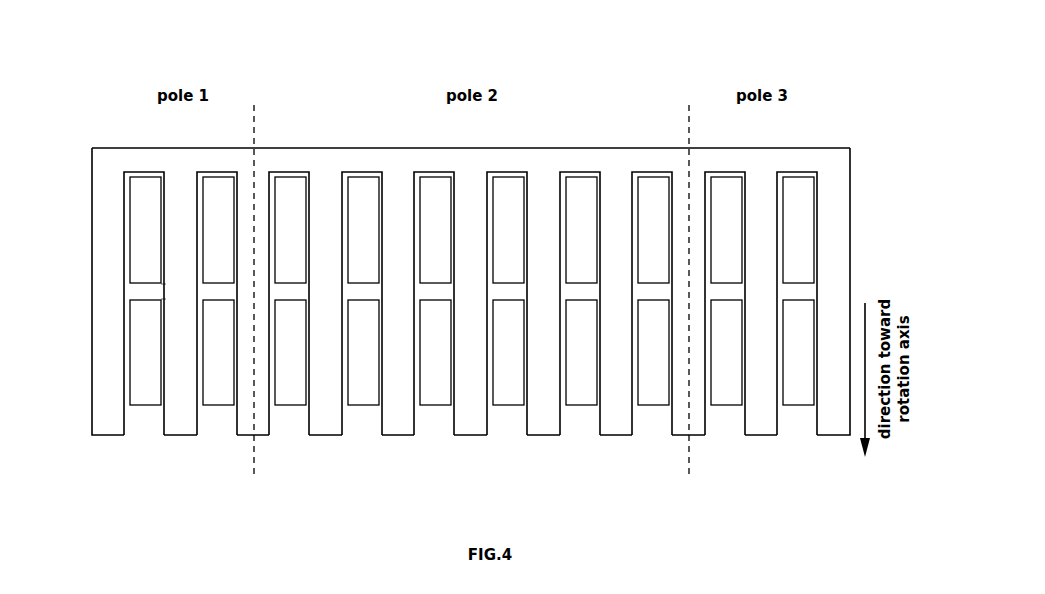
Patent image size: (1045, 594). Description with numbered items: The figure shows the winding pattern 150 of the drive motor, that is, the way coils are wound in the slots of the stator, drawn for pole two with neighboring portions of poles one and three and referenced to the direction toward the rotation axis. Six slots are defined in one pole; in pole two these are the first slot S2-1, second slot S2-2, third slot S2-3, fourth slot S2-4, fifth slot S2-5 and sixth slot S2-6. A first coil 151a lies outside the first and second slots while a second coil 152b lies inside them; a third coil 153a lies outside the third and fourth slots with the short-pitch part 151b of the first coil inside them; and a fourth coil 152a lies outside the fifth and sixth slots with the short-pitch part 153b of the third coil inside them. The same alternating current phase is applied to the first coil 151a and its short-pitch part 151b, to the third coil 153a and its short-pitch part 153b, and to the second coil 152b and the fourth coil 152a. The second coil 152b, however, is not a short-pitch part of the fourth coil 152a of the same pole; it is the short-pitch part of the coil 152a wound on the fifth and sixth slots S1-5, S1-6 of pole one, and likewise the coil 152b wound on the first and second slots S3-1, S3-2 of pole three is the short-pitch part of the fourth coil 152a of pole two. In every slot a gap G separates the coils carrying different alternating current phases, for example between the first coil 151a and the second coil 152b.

The winding pattern 150 is at (847, 78).
The first coil 151a is at (290, 184).
The fourth coil 152a is at (145, 184).
The third coil 153a is at (508, 184).
The short-pitch part of the first coil 151b is at (443, 397).
The second coil 152b is at (298, 397).
The short-pitch part of the third coil 153b is at (153, 397).
The gap G is at (122, 290).
The fifth slot of pole 1 S1-5 is at (162, 424).
The sixth slot of pole 1 S1-6 is at (235, 424).
The first slot S2-1 is at (307, 424).
The second slot S2-2 is at (380, 424).
The third slot S2-3 is at (452, 424).
The fourth slot S2-4 is at (525, 424).
The fifth slot S2-5 is at (598, 424).
The sixth slot S2-6 is at (670, 424).
The first slot of pole 3 S3-1 is at (743, 424).
The second slot of pole 3 S3-2 is at (815, 424).